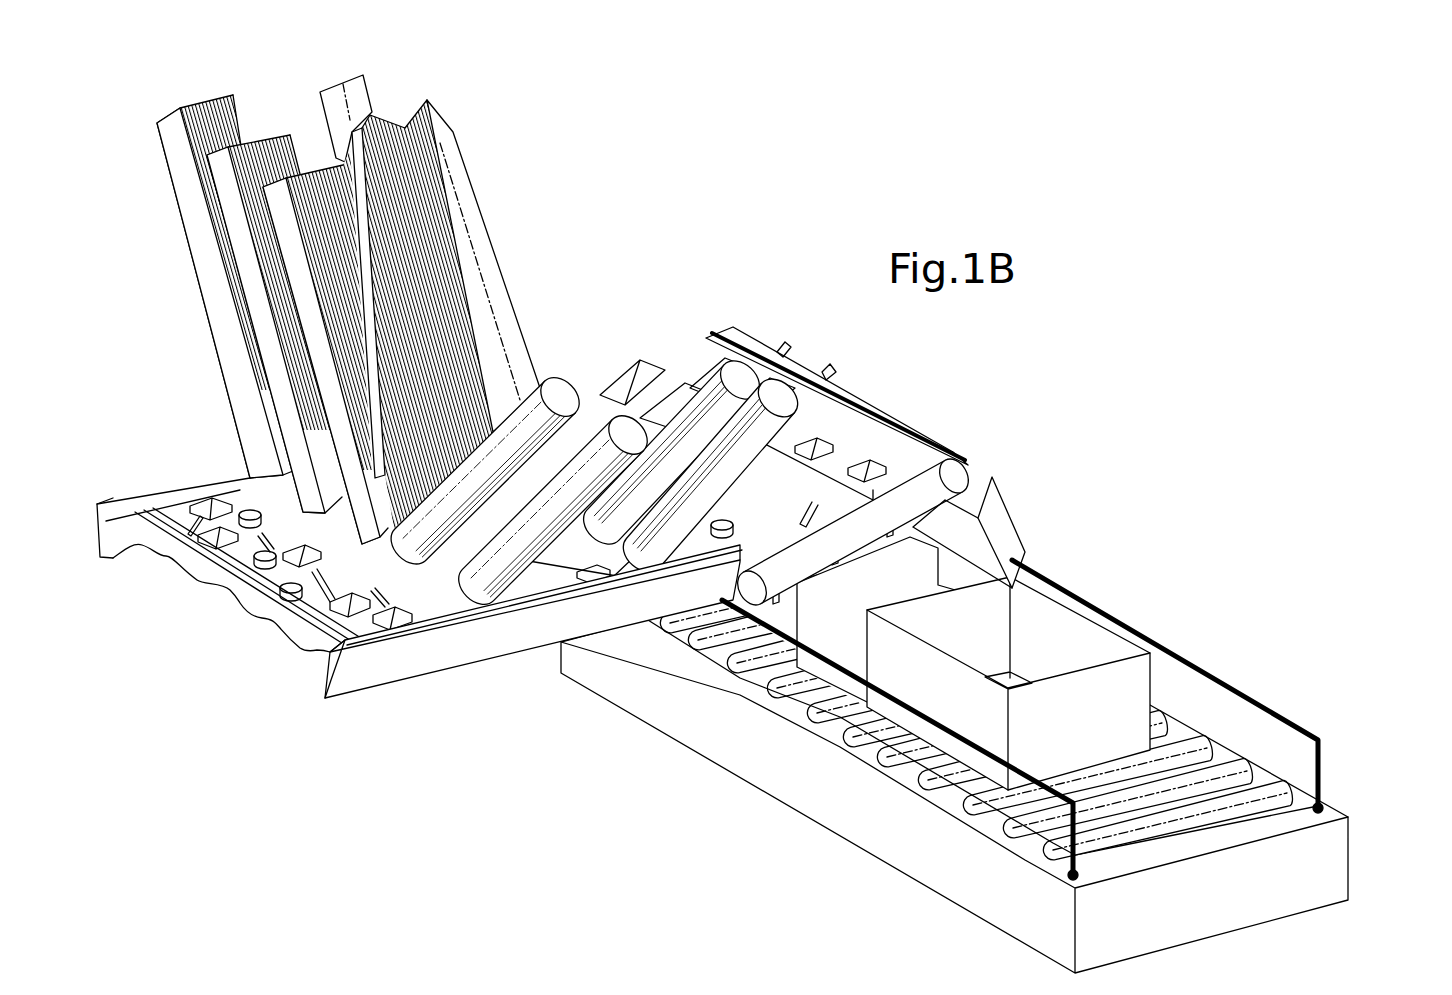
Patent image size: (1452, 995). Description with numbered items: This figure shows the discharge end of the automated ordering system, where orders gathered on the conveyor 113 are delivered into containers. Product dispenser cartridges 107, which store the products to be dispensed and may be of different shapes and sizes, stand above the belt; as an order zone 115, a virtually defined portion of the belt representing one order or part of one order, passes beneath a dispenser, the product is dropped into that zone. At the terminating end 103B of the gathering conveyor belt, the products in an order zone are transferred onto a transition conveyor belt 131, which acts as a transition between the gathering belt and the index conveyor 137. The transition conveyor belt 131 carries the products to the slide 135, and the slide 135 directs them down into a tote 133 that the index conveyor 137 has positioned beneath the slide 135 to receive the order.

The terminating end 103B is at (440, 702).
The cartridge 107 is at (468, 222).
The conveyor 113 is at (213, 503).
The order zone 115 is at (196, 364).
The transition conveyor belt 131 is at (700, 312).
The tote 133 is at (1123, 695).
The slide 135 is at (1014, 523).
The index conveyor 137 is at (1337, 851).